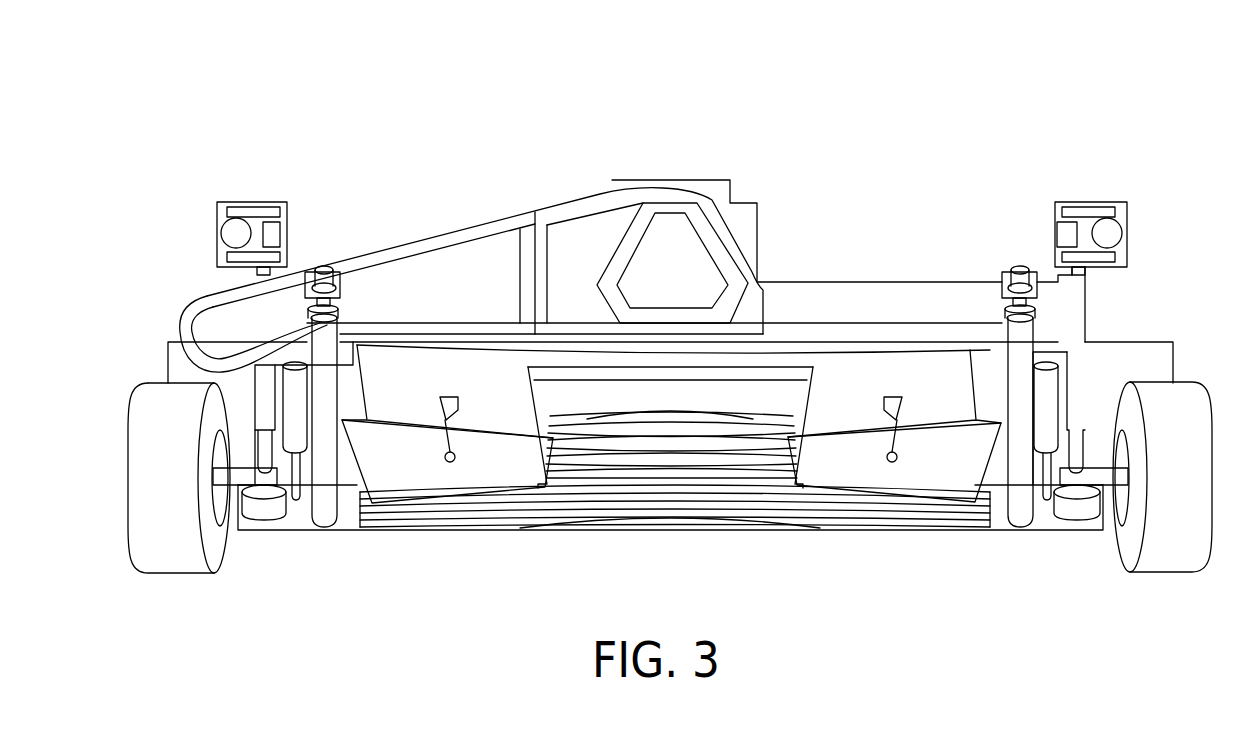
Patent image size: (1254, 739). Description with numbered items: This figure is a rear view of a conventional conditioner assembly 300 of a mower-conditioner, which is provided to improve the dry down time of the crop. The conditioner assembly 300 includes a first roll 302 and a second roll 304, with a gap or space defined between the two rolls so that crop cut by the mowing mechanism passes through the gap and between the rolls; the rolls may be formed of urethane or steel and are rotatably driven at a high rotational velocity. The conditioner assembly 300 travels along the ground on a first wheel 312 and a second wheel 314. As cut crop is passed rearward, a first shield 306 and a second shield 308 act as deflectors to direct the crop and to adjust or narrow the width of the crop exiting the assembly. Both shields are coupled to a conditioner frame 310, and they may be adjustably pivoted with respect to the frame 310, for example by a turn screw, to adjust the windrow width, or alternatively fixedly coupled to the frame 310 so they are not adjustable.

The conditioner assembly 300 is at (366, 130).
The first roll 302 is at (732, 483).
The second roll 304 is at (640, 433).
The first shield 306 is at (422, 485).
The second shield 308 is at (920, 485).
The conditioner frame 310 is at (787, 363).
The first wheel 312 is at (170, 565).
The second wheel 314 is at (1168, 567).